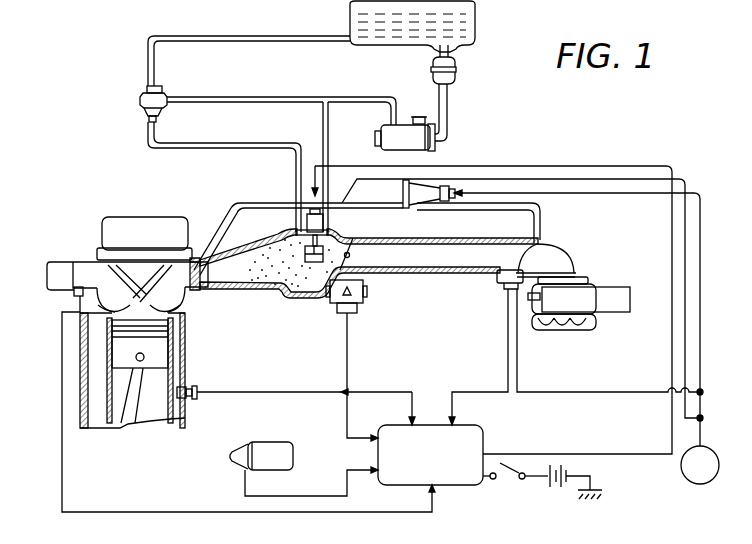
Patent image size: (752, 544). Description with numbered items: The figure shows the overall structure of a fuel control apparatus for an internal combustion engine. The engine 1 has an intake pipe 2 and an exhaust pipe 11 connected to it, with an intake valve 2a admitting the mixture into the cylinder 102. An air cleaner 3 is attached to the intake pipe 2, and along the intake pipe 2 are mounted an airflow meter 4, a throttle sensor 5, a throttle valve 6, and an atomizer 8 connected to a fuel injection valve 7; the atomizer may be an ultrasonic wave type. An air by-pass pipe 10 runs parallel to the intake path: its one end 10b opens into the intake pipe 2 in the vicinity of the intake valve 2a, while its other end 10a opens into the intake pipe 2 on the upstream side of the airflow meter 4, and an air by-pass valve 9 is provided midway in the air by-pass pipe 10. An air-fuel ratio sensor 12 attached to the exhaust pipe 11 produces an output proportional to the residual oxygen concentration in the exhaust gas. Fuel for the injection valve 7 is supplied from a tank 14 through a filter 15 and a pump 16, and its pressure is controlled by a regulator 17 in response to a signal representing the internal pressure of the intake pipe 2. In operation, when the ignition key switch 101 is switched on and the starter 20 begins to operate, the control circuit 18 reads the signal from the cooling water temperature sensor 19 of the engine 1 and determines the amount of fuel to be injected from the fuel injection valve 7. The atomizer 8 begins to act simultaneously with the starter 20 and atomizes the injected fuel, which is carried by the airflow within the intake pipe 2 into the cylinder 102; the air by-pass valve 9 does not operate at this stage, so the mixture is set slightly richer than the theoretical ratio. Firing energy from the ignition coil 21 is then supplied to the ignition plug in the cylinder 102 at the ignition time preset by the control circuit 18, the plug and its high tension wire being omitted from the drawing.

The engine 1 is at (120, 429).
The intake pipe 2 is at (262, 282).
The intake valve 2a is at (196, 292).
The air cleaner 3 is at (616, 313).
The airflow meter 4 is at (498, 282).
The throttle sensor 5 is at (365, 294).
The throttle valve 6 is at (351, 255).
The fuel injection valve 7 is at (307, 216).
The atomizer 8 is at (311, 263).
The air by-pass valve 9 is at (416, 205).
The air by-pass pipe 10 is at (240, 200).
The other end of air by-pass pipe 10a is at (542, 235).
The one end of air by-pass pipe 10b is at (200, 268).
The exhaust pipe 11 is at (60, 262).
The air-fuel ratio sensor 12 is at (75, 293).
The tank 14 is at (478, 34).
The filter 15 is at (458, 72).
The pump 16 is at (420, 152).
The regulator 17 is at (142, 110).
The control circuit 18 is at (488, 440).
The cooling water temperature sensor 19 is at (197, 400).
The starter 20 is at (686, 478).
The ignition coil 21 is at (275, 441).
The ignition key switch 101 is at (509, 480).
The cylinder 102 is at (138, 303).